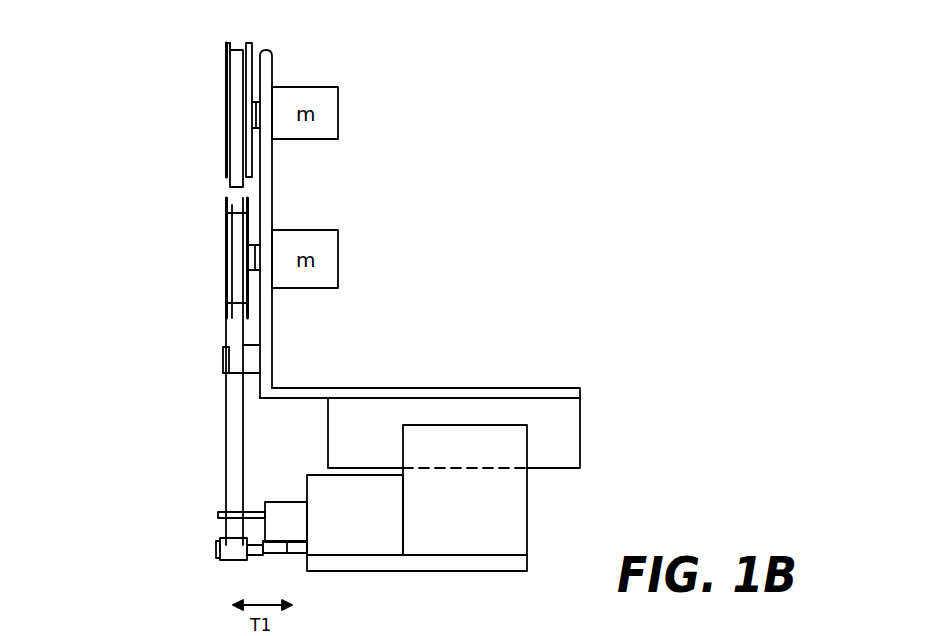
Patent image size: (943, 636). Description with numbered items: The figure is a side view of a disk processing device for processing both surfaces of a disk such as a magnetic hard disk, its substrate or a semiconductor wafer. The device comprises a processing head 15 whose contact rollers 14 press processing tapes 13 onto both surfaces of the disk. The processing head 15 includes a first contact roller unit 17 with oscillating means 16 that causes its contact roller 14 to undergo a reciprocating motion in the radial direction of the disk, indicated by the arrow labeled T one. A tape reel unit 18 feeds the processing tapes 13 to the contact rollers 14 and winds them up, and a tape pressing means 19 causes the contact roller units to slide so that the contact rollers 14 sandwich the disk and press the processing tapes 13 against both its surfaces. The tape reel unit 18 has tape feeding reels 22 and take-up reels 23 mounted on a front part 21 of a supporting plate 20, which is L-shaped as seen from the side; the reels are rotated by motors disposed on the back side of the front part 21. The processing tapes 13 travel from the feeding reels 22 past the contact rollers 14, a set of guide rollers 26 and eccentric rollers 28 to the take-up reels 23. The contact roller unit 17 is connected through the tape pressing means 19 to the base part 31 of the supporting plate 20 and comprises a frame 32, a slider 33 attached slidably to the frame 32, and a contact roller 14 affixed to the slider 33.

The processing tapes 13 is at (226, 407).
The contact rollers 14 is at (215, 558).
The processing head 15 is at (545, 158).
The oscillating means 16 is at (529, 515).
The first contact roller unit 17 is at (178, 577).
The tape reel unit 18 is at (115, 182).
The tape pressing means 19 is at (586, 440).
The supporting plate 20 is at (410, 290).
The front part 21 is at (272, 335).
The tape feeding reels 22 is at (226, 100).
The take-up reels 23 is at (225, 250).
The guide rollers 26 is at (218, 512).
The eccentric rollers 28 is at (223, 360).
The base part 31 is at (420, 388).
The frame 32 is at (346, 540).
The slider 33 is at (288, 500).